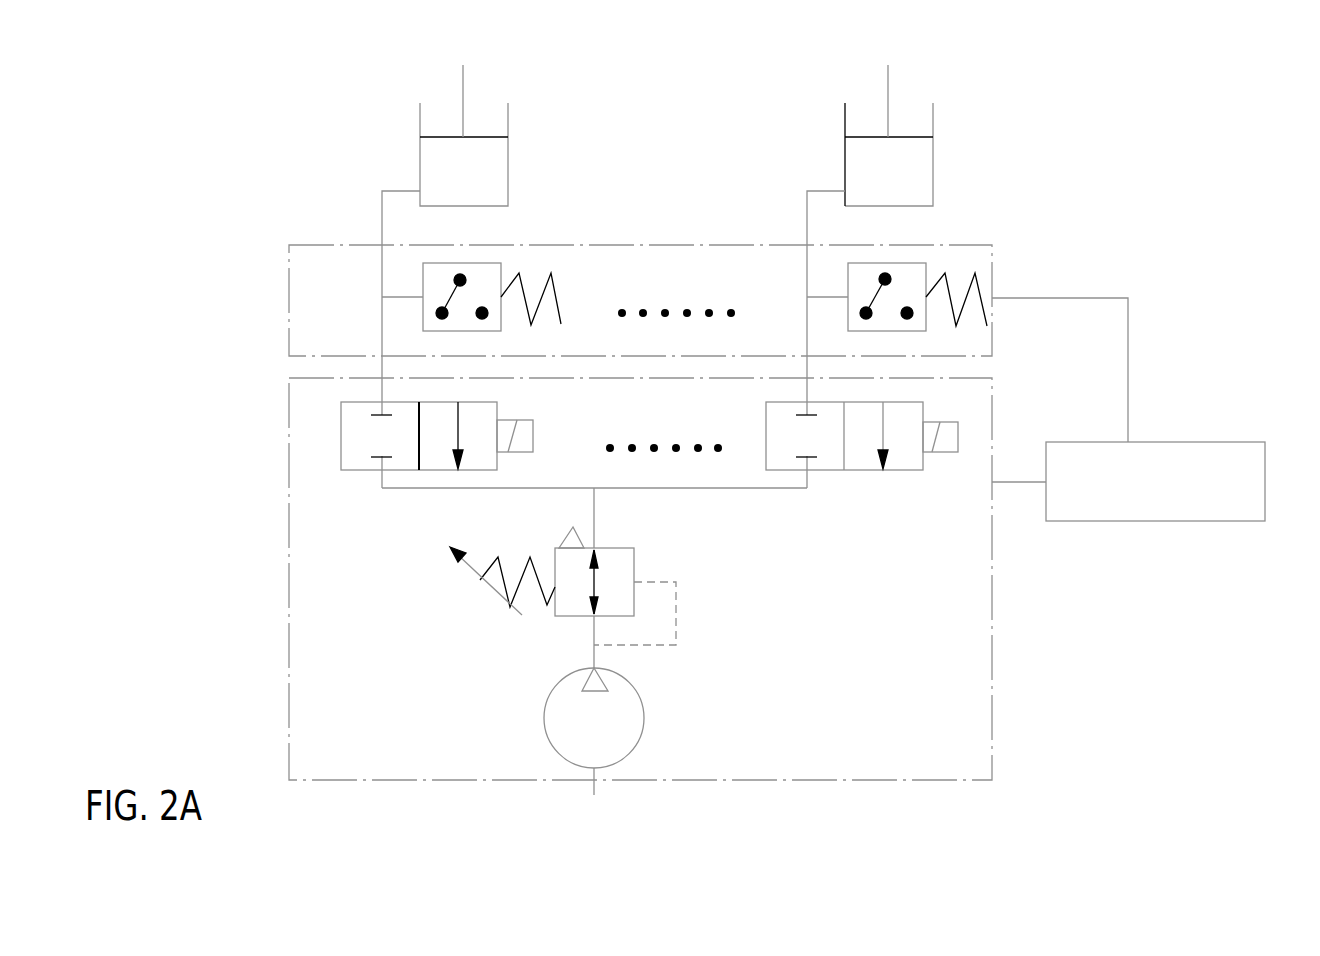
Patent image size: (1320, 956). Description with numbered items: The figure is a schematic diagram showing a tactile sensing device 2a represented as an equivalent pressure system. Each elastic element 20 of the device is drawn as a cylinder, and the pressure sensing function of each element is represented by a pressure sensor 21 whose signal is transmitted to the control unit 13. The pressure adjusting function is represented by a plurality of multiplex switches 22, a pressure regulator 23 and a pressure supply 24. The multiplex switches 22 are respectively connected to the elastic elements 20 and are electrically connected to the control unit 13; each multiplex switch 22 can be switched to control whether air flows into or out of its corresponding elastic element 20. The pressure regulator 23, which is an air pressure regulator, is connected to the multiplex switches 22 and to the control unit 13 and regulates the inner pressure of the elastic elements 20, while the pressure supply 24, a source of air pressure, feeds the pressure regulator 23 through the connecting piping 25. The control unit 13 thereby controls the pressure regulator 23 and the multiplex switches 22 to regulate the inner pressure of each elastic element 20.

The tactile sensing device 2a is at (332, 133).
The elastic element 20 is at (487, 175).
The pressure sensor 21 is at (475, 263).
The multiplex switch 22 is at (480, 410).
The pressure regulator 23 is at (629, 571).
The pressure supply 24 is at (633, 719).
The hydraulic piping 25 is at (381, 232).
The control unit 13 is at (1153, 510).